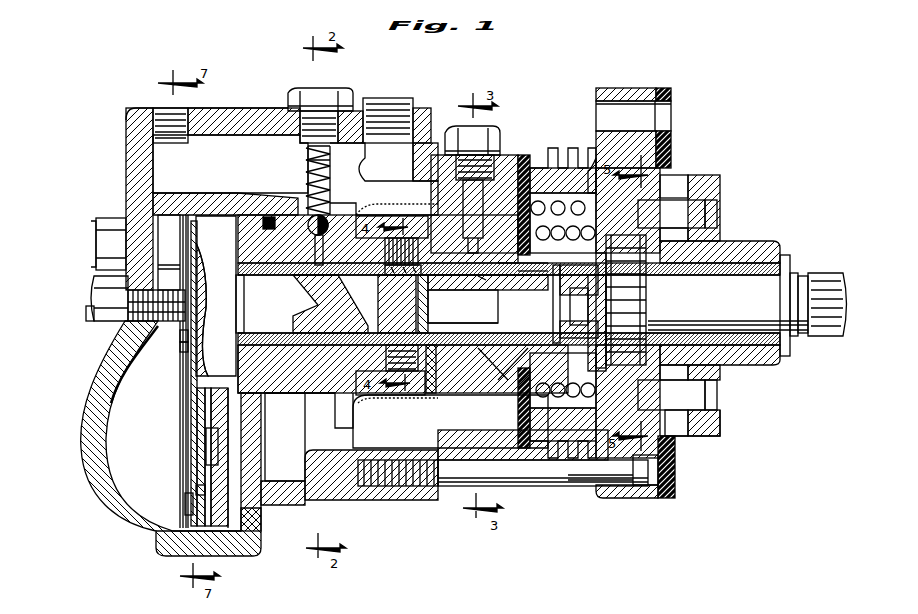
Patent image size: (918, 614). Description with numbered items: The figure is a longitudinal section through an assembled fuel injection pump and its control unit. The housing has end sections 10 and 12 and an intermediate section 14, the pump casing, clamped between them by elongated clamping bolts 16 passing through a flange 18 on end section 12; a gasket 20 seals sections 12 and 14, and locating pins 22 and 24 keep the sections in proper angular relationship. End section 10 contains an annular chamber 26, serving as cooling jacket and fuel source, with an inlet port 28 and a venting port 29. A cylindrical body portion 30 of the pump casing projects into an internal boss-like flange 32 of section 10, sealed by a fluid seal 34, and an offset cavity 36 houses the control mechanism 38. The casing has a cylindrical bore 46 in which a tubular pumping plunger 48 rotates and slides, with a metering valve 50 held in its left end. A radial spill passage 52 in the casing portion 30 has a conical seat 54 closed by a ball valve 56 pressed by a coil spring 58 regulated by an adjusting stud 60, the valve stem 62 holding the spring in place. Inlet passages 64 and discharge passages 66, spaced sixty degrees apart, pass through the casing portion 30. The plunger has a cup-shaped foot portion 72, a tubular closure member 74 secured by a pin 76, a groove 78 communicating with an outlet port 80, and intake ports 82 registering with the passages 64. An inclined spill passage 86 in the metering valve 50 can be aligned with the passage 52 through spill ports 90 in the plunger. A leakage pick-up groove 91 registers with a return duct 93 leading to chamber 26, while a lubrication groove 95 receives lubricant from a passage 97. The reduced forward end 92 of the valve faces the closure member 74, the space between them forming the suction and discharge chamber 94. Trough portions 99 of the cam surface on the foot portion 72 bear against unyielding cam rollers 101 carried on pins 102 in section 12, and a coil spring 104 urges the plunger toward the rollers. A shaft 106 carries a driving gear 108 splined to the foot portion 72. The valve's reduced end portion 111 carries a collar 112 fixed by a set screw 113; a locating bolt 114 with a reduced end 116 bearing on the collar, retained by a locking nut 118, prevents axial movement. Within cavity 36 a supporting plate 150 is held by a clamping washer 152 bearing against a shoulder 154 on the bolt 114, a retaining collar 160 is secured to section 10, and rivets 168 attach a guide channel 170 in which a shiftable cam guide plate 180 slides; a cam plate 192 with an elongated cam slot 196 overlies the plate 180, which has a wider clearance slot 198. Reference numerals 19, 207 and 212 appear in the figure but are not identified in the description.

The end section 10 is at (128, 104).
The end section 12 is at (665, 150).
The intermediate section 14 is at (500, 147).
The clamping bolts 16 is at (505, 472).
The flange 18 is at (630, 82).
The chamber 19 is at (405, 157).
The gasket 20 is at (517, 147).
The locating pin 22 is at (545, 160).
The locating pin 24 is at (372, 440).
The annular chamber 26 is at (300, 470).
The inlet port 28 is at (380, 100).
The venting port 29 is at (152, 100).
The cylindrical body portion 30 is at (315, 386).
The annular boss-like flange 32 is at (255, 195).
The fluid seal 34 is at (283, 402).
The offset cavity 36 is at (108, 480).
The control mechanism 38 is at (260, 510).
The cylindrical bore 46 is at (500, 255).
The pumping plunger 48 is at (516, 255).
The metering valve 50 is at (260, 338).
The spill passage 52 is at (320, 246).
The conical valve seat 54 is at (352, 206).
The ball valve element 56 is at (303, 218).
The coil spring 58 is at (326, 166).
The adjusting stud 60 is at (296, 86).
The valve stem 62 is at (302, 150).
The inlet passages 64 is at (372, 355).
The discharge passages 66 is at (472, 200).
The foot portion 72 is at (640, 388).
The closure member 74 is at (434, 340).
The pin 76 is at (545, 295).
The groove 78 is at (468, 276).
The outlet port 80 is at (475, 278).
The intake ports 82 is at (419, 260).
The metering valve spill passage 86 is at (330, 282).
The spill ports 90 is at (306, 240).
The fuel leakage pick-up groove 91 is at (503, 364).
The reduced forward end 92 is at (415, 285).
The return duct 93 is at (436, 426).
The suction and discharge chamber 94 is at (463, 311).
The lubrication groove 95 is at (548, 230).
The passage 97 is at (513, 364).
The trough portions 99 is at (640, 207).
The cam rollers 101 is at (705, 208).
The pins 102 is at (676, 430).
The coil spring 104 is at (575, 388).
The shaft 106 is at (770, 278).
The driving gear 108 is at (635, 296).
The reduced end portion 111 is at (238, 300).
The locating and adjusting collar 112 is at (207, 234).
The set screw 113 is at (214, 291).
The locating bolt 114 is at (80, 308).
The reduced end 116 is at (190, 268).
The locking nut 118 is at (92, 270).
The supporting plate 150 is at (183, 364).
The clamping washer 152 is at (178, 345).
The shoulder 154 is at (176, 332).
The retaining collar 160 is at (112, 208).
The rivets 168 is at (177, 492).
The guide channel 170 is at (250, 532).
The cam guide plate 180 is at (188, 478).
The cam plate 192 is at (188, 410).
The cam slot 196 is at (196, 432).
The clearance slot 198 is at (200, 440).
The washer 207 is at (95, 225).
The diaphragm 212 is at (175, 384).